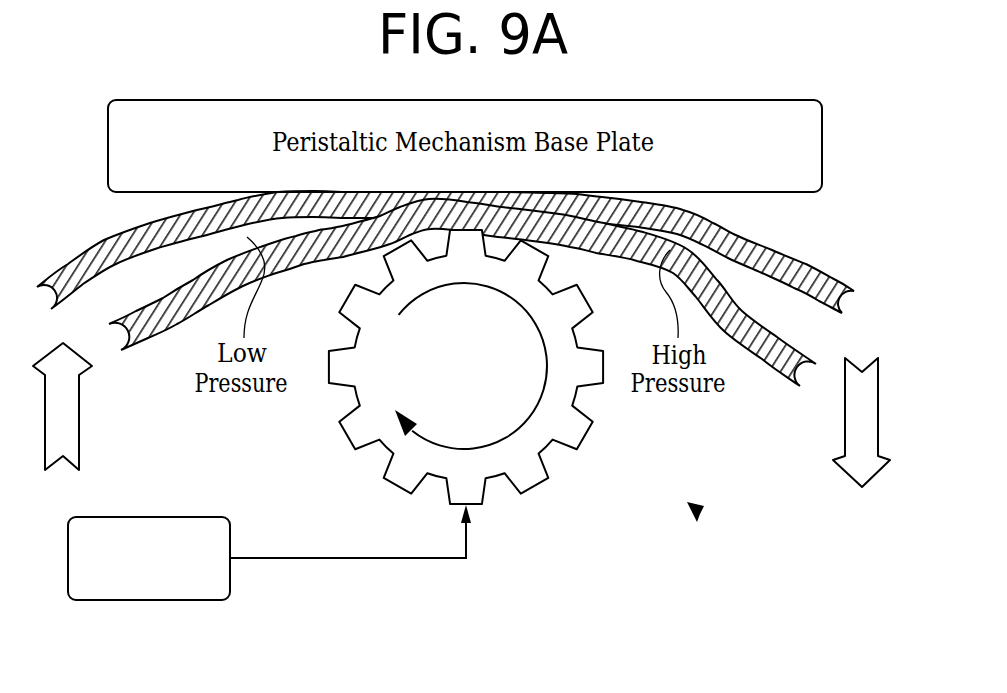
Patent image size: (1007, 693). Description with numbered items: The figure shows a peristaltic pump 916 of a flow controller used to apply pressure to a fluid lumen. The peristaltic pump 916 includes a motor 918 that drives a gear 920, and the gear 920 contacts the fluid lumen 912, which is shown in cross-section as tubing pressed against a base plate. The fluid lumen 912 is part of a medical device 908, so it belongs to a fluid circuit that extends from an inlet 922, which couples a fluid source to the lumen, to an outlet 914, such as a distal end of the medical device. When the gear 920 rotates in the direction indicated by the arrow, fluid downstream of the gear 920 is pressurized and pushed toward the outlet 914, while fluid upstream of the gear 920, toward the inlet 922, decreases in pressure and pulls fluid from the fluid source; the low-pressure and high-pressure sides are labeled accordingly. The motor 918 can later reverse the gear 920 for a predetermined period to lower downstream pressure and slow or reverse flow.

The medical device 908 is at (866, 304).
The fluid lumen 912 is at (799, 311).
The outlet 914 is at (880, 408).
The peristaltic pump 916 is at (700, 514).
The motor 918 is at (157, 517).
The gear 920 is at (577, 432).
The inlet 922 is at (80, 418).